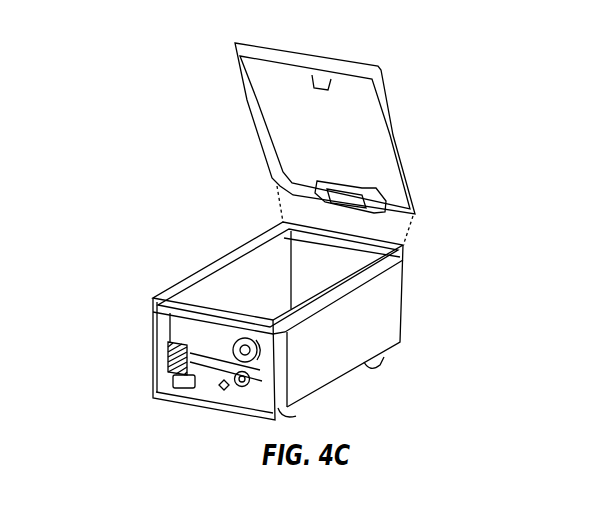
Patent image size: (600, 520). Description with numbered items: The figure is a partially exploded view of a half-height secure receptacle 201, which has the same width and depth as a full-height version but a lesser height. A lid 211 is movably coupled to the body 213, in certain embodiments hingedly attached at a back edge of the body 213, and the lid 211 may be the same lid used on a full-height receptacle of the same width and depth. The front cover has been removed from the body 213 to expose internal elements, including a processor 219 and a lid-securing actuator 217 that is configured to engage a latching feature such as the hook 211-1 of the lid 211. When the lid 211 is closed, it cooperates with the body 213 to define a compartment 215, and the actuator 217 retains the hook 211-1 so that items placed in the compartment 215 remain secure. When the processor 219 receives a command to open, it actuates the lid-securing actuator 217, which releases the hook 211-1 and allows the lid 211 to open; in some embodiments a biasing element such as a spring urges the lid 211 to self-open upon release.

The secure receptacle 201 is at (153, 82).
The lid 211 is at (392, 134).
The hook 211-1 is at (326, 87).
The body 213 is at (378, 320).
The compartment 215 is at (256, 262).
The lid-securing actuator 217 is at (237, 338).
The processor 219 is at (171, 386).